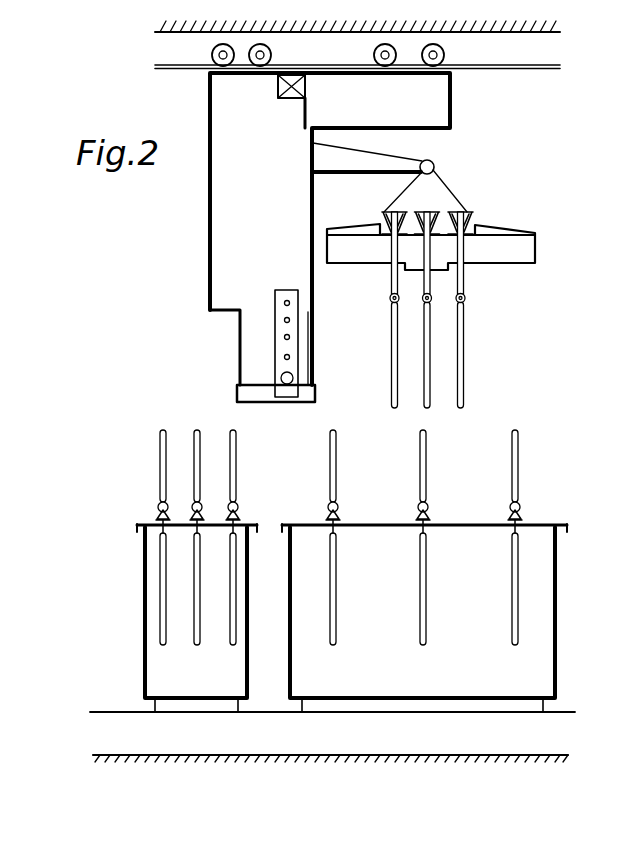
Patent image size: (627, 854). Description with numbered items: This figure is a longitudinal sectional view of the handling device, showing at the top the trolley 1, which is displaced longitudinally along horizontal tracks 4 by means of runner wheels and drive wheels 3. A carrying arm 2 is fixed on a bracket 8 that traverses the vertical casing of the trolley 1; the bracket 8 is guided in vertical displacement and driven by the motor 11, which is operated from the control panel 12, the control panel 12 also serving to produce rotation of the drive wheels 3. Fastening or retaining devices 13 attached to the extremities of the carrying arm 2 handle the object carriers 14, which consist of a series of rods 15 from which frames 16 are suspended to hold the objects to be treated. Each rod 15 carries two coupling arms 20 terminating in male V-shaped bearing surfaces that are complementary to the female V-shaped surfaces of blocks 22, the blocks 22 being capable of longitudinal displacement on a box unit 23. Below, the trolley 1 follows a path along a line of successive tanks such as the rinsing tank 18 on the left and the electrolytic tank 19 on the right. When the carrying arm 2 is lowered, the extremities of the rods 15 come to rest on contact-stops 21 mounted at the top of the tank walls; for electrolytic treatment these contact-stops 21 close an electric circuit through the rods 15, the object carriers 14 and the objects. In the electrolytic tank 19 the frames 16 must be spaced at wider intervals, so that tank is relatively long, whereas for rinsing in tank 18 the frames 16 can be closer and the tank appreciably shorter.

The trolley 1 is at (225, 184).
The carrying arm 2 is at (436, 162).
The drive wheels 3 is at (270, 52).
The horizontal tracks 4 is at (345, 66).
The bracket 8 is at (345, 165).
The motor 11 is at (278, 86).
The control panel 12 is at (283, 346).
The fastening devices 13 is at (443, 192).
The object carriers 14 is at (464, 356).
The rods 15 is at (466, 298).
The frames 16 is at (390, 362).
The rinsing tank 18 is at (180, 567).
The electrolytic tank 19 is at (535, 567).
The coupling arms 20 is at (466, 276).
The contact-stops 21 is at (243, 514).
The blocks 22 is at (473, 218).
The box unit 23 is at (517, 248).